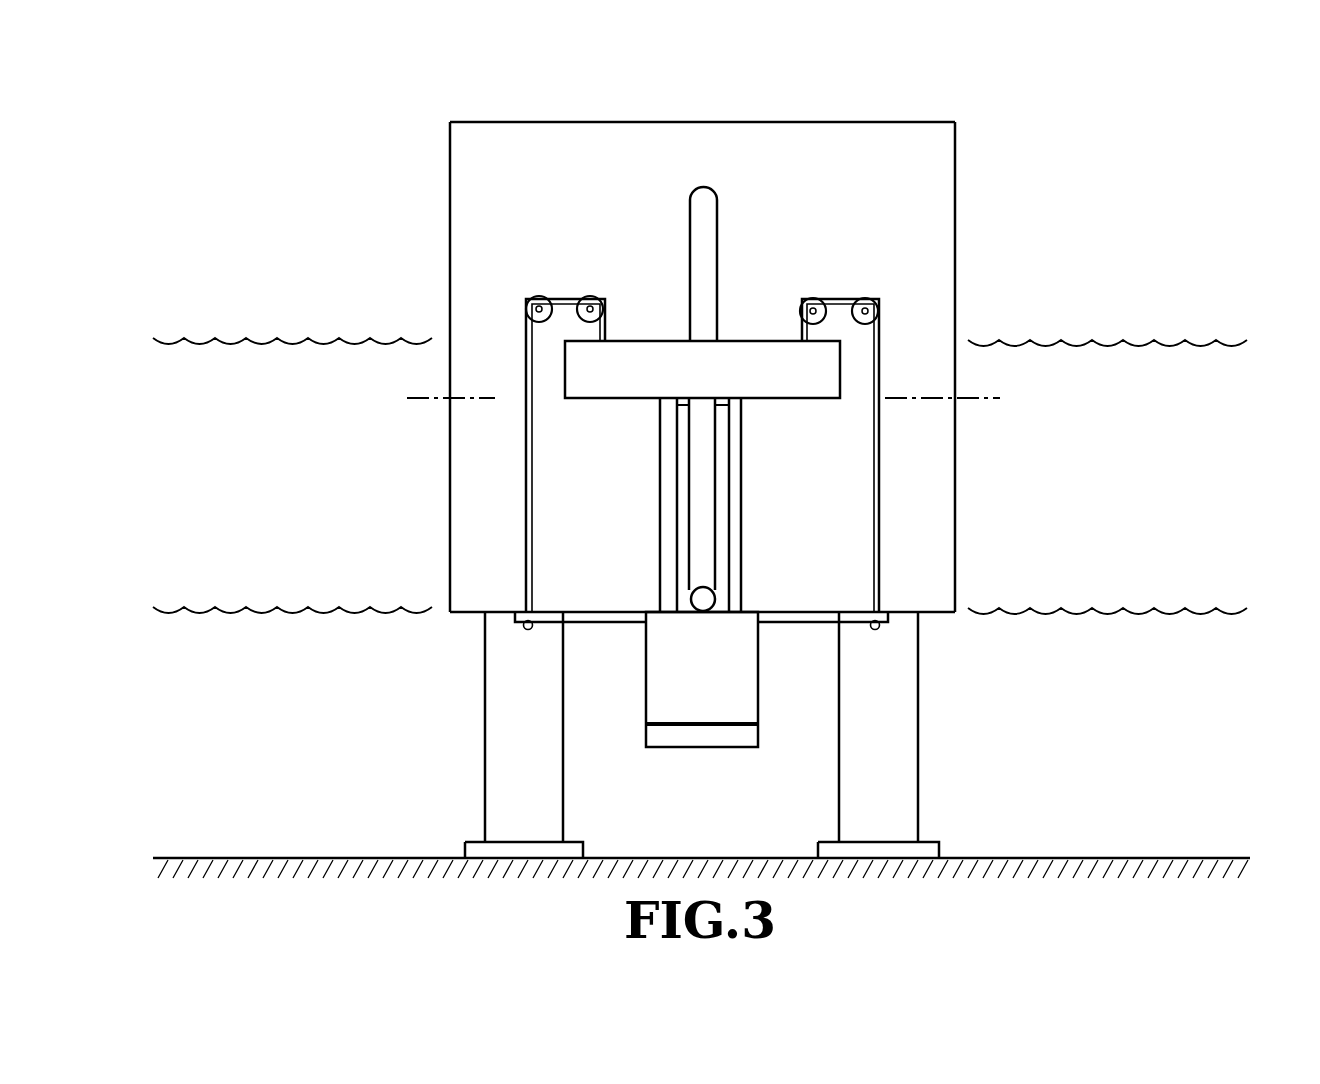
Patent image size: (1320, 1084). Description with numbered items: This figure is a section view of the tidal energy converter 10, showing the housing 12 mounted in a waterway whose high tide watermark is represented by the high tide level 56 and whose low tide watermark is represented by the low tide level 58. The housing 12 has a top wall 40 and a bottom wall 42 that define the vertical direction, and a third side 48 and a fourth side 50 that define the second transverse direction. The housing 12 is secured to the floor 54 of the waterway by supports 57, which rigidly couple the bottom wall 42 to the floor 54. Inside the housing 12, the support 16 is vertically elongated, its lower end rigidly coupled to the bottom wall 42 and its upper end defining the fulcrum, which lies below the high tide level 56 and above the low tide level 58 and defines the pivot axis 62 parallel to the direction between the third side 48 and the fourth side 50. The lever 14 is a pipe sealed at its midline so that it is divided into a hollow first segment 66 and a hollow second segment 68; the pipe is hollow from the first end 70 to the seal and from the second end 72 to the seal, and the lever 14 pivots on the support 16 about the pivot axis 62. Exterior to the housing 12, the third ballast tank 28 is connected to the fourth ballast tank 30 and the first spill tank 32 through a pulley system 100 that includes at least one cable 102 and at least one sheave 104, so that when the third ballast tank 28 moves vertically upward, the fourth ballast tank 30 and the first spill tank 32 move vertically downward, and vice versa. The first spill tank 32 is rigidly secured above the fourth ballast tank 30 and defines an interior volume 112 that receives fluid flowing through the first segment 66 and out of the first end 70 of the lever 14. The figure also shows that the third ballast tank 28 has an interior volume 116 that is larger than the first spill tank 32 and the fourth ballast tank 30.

The tidal energy converter 10 is at (1032, 138).
The housing 12 is at (731, 112).
The lever 14 is at (680, 259).
The support 16 is at (745, 505).
The third ballast tank 28 is at (748, 336).
The fourth ballast tank 30 is at (767, 724).
The first spill tank 32 is at (767, 663).
The top wall 40 is at (833, 121).
The bottom wall 42 is at (935, 620).
The third side 48 is at (450, 240).
The fourth side 50 is at (957, 240).
The floor 54 is at (1080, 857).
The high tide level 56 is at (265, 338).
The supports 57 is at (490, 732).
The low tide level 58 is at (265, 608).
The pivot axis 62 is at (422, 398).
The first segment 66 is at (683, 545).
The second segment 68 is at (682, 219).
The first end 70 is at (705, 588).
The second end 72 is at (697, 188).
The pulley system 100 is at (550, 476).
The cable 102 is at (535, 512).
The sheave 104 is at (539, 298).
The interior volume 112 is at (690, 676).
The interior volume 116 is at (610, 370).